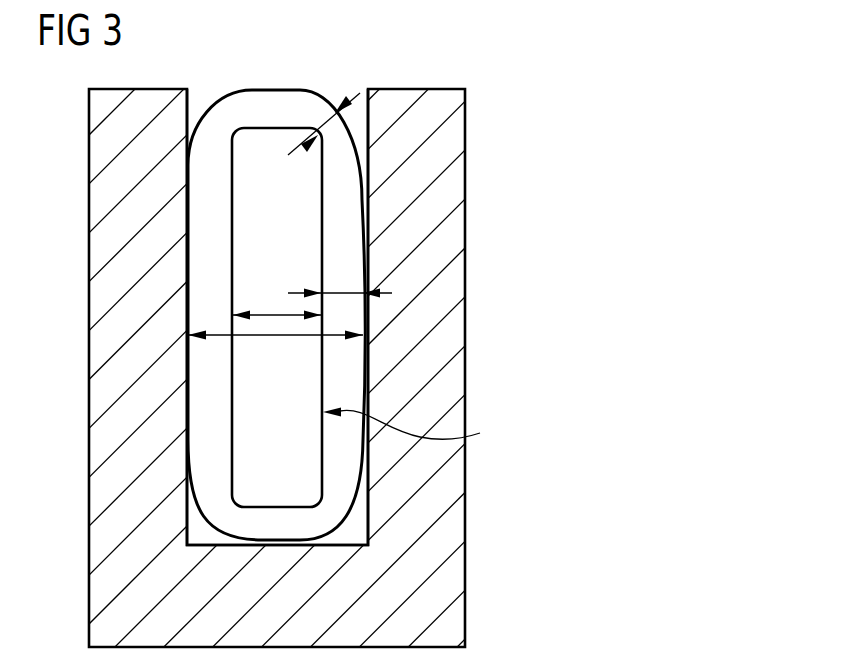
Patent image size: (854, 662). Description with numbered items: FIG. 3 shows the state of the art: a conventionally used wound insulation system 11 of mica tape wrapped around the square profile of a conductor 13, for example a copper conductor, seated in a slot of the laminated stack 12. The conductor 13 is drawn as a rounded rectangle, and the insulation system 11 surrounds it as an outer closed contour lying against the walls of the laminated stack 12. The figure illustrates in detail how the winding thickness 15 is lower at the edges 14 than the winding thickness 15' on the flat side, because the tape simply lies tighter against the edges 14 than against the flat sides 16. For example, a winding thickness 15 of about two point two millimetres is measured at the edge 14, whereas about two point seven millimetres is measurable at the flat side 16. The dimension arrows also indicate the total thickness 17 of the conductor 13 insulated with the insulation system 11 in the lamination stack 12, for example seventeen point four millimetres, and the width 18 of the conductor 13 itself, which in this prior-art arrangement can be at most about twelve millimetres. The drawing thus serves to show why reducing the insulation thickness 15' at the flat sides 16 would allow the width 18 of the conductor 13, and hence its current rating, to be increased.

The wound insulation system 11 is at (207, 257).
The laminated stack 12 is at (102, 311).
The conductor 13 is at (250, 193).
The edges 14 is at (347, 128).
The winding thickness at the edges 15 is at (324, 104).
The winding thickness on the flat side 15' is at (338, 251).
The flat sides 16 is at (415, 430).
The total thickness 17 is at (278, 338).
The conductor width 18 is at (278, 310).